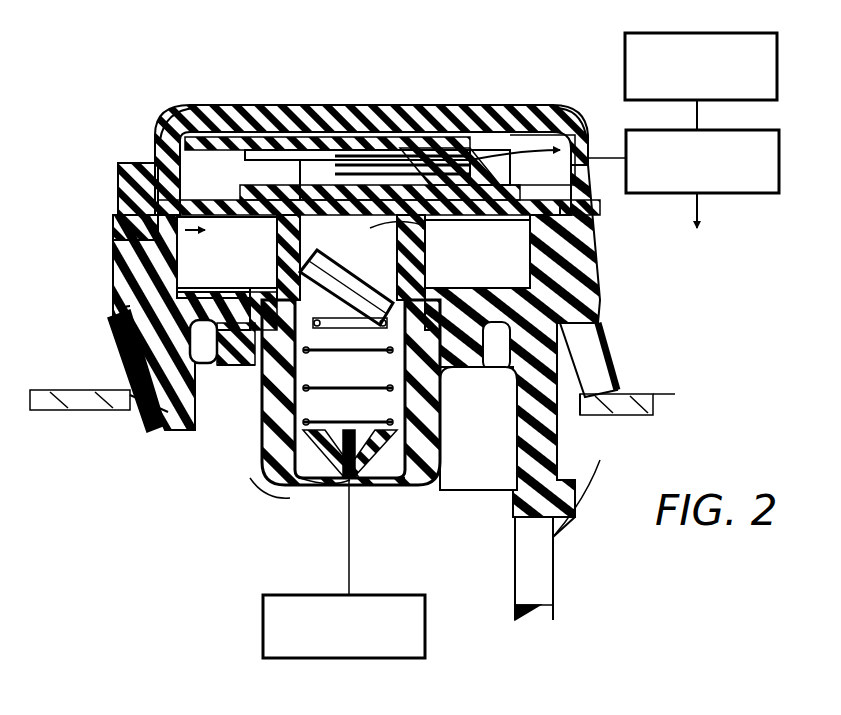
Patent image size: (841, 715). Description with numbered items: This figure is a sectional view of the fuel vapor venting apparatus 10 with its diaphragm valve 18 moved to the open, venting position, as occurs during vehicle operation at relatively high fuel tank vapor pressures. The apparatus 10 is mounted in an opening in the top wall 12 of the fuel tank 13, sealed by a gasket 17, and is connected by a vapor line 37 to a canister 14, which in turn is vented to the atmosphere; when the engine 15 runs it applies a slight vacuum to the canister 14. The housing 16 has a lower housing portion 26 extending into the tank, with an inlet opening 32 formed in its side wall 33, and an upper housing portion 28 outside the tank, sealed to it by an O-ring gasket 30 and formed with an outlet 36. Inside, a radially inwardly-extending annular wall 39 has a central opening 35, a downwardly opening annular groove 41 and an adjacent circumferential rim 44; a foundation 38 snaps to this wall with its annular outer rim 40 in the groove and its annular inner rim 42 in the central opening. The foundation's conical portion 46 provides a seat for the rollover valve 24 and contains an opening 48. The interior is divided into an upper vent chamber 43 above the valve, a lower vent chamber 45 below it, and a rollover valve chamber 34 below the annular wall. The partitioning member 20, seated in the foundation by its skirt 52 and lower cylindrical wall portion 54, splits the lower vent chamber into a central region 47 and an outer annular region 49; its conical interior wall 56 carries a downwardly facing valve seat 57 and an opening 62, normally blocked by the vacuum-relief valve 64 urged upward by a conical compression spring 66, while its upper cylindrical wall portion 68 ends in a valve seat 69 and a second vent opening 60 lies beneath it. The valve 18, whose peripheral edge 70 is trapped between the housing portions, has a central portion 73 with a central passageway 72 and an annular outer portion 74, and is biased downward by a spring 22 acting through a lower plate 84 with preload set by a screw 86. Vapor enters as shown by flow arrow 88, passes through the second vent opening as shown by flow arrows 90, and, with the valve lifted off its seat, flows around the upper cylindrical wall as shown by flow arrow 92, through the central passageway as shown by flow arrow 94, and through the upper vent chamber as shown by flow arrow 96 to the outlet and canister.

The apparatus 10 is at (528, 78).
The top wall 12 is at (650, 395).
The fuel tank 13 is at (630, 388).
The canister 14 is at (780, 162).
The engine 15 is at (777, 66).
The housing 16 is at (93, 317).
The gasket 17 is at (595, 340).
The valve 18 is at (205, 150).
The partitioning member 20 is at (227, 252).
The spring 22 is at (245, 130).
The rollover valve 24 is at (425, 618).
The lower housing portion 26 is at (168, 415).
The upper housing portion 28 is at (130, 190).
The O-ring gasket 30 is at (113, 262).
The opening 32 is at (540, 556).
The side wall 33 is at (540, 622).
The rollover valve chamber 34 is at (258, 475).
The central opening 35 is at (232, 367).
The outlet 36 is at (563, 120).
The vapor line 37 is at (598, 157).
The foundation 38 is at (260, 455).
The annular wall 39 is at (205, 265).
The annular outer rim 40 is at (195, 345).
The annular groove 41 is at (207, 365).
The annular inner rim 42 is at (248, 300).
The upper vent chamber 43 is at (185, 140).
The circumferential rim 44 is at (228, 368).
The lower vent chamber 45 is at (135, 225).
The conical portion 46 is at (318, 484).
The central region 47 is at (302, 200).
The opening 48 is at (342, 480).
The outer annular region 49 is at (520, 255).
The skirt 52 is at (445, 345).
The lower cylindrical wall portion 54 is at (420, 425).
The conical interior wall 56 is at (440, 300).
The valve seat 57 is at (346, 289).
The second vent opening 60 is at (590, 300).
The opening 62 is at (318, 255).
The vacuum-relief valve 64 is at (345, 345).
The conical compression spring 66 is at (400, 440).
The upper cylindrical wall portion 68 is at (420, 245).
The valve seat 69 is at (265, 220).
The peripheral edge 70 is at (160, 195).
The central passageway 72 is at (324, 185).
The central portion 73 is at (385, 130).
The annular outer portion 74 is at (258, 136).
The lower plate 84 is at (292, 150).
The screw 86 is at (350, 115).
The flow arrow 88 is at (400, 482).
The flow arrows 90 is at (478, 428).
The flow arrow 92 is at (425, 248).
The flow arrow 94 is at (436, 130).
The flow arrow 96 is at (500, 160).